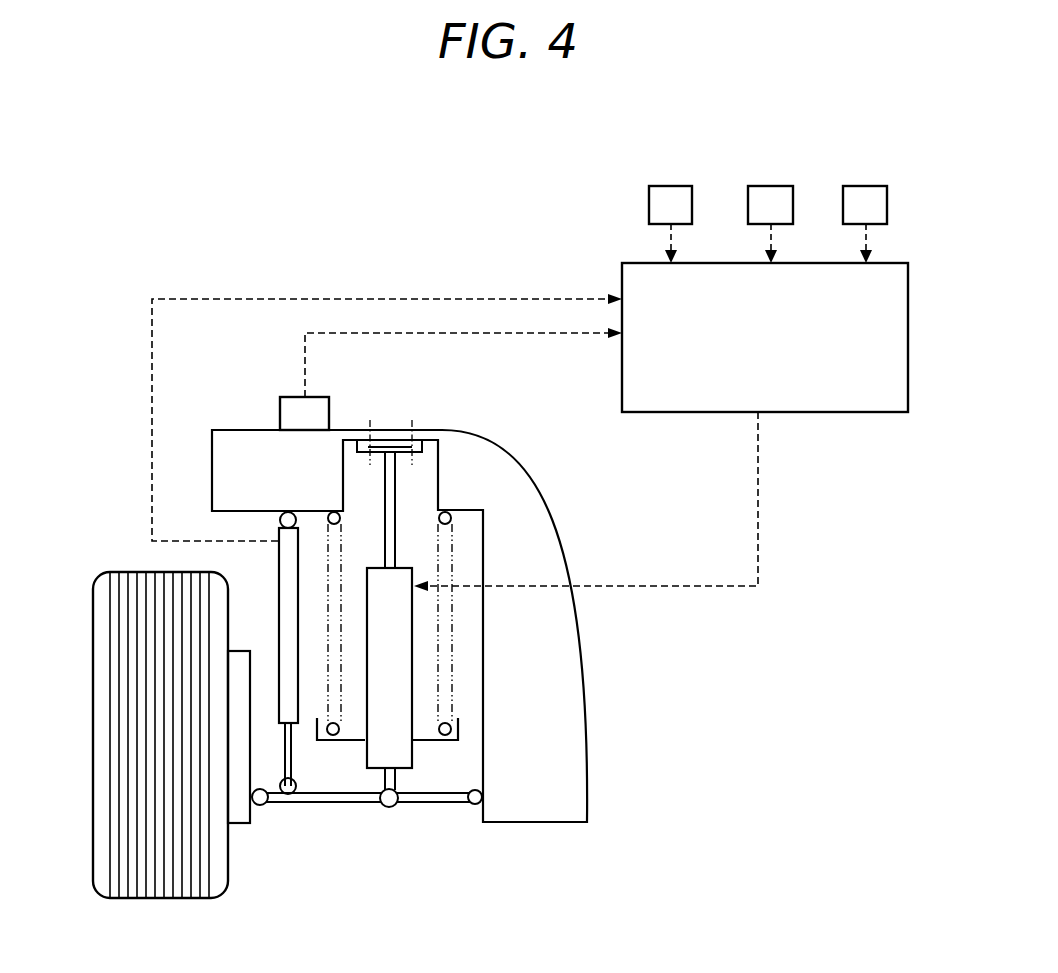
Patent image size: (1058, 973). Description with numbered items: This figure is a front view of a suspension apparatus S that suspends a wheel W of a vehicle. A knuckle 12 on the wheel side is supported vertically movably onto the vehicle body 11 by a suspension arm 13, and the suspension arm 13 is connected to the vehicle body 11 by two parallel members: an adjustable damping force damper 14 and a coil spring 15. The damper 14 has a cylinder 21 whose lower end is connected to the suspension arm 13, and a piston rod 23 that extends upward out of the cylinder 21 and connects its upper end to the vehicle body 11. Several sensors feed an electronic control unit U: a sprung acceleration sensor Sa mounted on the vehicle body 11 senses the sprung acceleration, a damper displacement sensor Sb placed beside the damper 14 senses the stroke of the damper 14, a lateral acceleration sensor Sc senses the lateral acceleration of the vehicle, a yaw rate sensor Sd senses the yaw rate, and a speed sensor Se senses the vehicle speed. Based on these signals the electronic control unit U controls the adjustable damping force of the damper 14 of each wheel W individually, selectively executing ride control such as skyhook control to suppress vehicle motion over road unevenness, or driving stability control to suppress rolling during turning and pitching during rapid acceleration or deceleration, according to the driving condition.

The vehicle body 11 is at (222, 436).
The knuckle 12 is at (236, 653).
The suspension arm 13 is at (340, 800).
The adjustable damping force damper 14 is at (362, 748).
The coil spring 15 is at (341, 522).
The cylinder 21 is at (412, 750).
The piston rod 23 is at (392, 556).
The wheel W is at (100, 582).
The suspension apparatus S is at (367, 806).
The electronic control unit U is at (640, 288).
The sprung acceleration sensor Sa is at (288, 406).
The damper displacement sensor Sb is at (278, 590).
The lateral acceleration sensor Sc is at (673, 178).
The yaw rate sensor Sd is at (773, 178).
The speed sensor Se is at (869, 178).